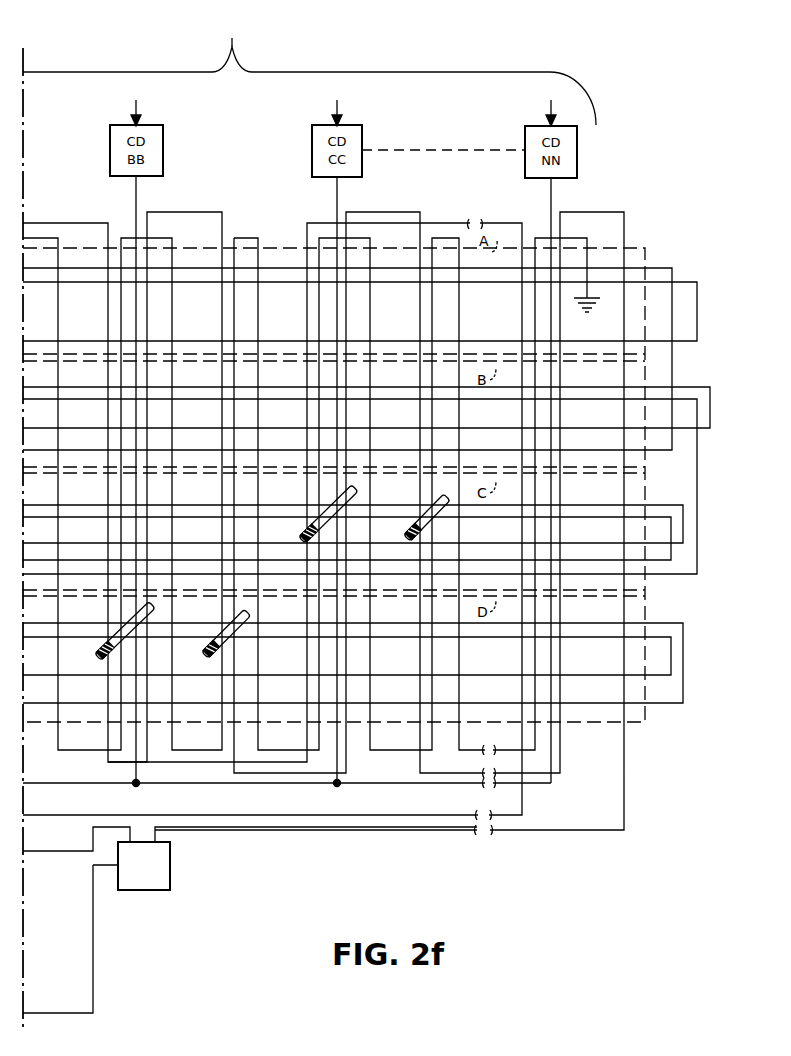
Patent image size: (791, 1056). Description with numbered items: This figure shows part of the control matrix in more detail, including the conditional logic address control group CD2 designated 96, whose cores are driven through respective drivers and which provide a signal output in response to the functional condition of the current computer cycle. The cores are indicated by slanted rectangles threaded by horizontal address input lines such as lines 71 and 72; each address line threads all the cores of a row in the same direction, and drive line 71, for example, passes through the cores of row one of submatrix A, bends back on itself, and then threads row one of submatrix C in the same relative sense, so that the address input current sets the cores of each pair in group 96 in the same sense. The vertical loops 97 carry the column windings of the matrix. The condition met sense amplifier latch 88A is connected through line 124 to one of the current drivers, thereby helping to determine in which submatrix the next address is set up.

The conditional logic address control group CD2 96 is at (156, 73).
The address input line 71 is at (95, 269).
The address input line 72 is at (65, 387).
The column conductor loop 97 is at (58, 753).
The condition met sense amplifier latch 88A is at (170, 863).
The line 124 is at (93, 984).